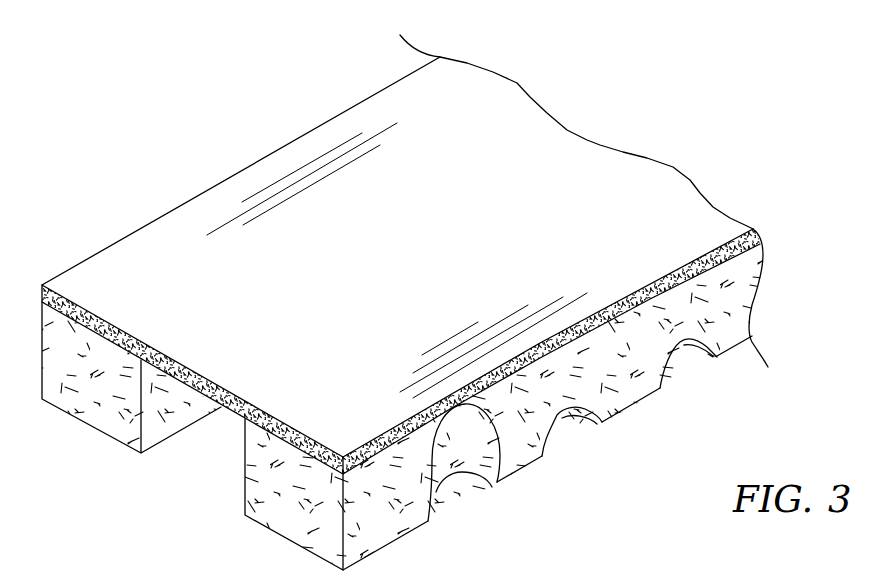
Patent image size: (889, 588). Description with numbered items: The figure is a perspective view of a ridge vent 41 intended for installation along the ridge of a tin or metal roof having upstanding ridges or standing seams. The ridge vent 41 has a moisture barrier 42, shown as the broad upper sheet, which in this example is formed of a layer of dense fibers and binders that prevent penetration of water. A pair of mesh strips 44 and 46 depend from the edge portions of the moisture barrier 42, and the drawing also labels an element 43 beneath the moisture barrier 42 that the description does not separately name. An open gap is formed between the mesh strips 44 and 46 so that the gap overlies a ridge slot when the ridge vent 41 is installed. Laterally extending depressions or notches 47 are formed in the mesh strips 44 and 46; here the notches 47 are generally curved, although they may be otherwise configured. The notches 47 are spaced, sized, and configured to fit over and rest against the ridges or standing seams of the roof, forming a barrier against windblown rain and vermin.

The ridge vent 41 is at (394, 306).
The moisture barrier 42 is at (396, 270).
The adhesive/intermediate layer 43 is at (497, 482).
The mesh strip 44 is at (287, 540).
The mesh strip 46 is at (83, 421).
The laterally extending notches 47 is at (434, 495).